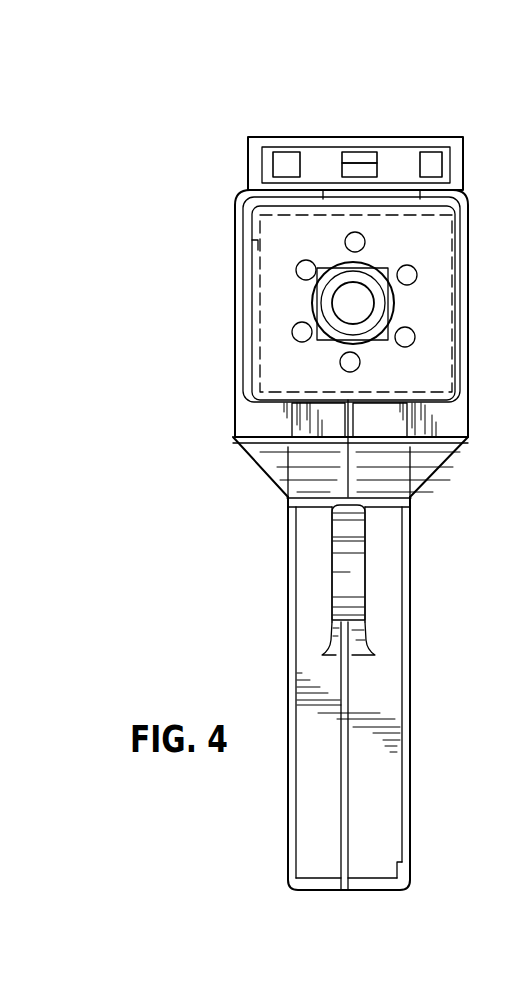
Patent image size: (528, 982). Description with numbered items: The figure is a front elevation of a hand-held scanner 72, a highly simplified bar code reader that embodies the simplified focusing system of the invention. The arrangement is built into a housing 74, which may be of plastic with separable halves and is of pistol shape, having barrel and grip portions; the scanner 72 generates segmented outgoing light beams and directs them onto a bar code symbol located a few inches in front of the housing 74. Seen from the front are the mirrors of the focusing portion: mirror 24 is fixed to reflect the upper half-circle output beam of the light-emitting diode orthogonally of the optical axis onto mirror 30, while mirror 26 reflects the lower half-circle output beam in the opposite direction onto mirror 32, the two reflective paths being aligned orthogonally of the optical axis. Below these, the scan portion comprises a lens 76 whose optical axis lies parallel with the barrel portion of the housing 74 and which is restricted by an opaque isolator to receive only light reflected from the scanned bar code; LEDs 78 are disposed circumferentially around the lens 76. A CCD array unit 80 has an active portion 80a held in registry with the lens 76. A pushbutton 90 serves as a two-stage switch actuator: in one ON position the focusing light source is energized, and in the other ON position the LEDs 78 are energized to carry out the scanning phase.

The hand-held scanner 72 is at (374, 78).
The mirror 24 is at (348, 155).
The mirror 26 is at (367, 173).
The mirror 30 is at (277, 157).
The mirror 32 is at (437, 157).
The housing 74 is at (226, 442).
The lens 76 is at (338, 327).
The LEDs 78 is at (357, 242).
The CCD array unit 80 is at (262, 243).
The active portion 80a is at (385, 345).
The pushbutton 90 is at (340, 565).